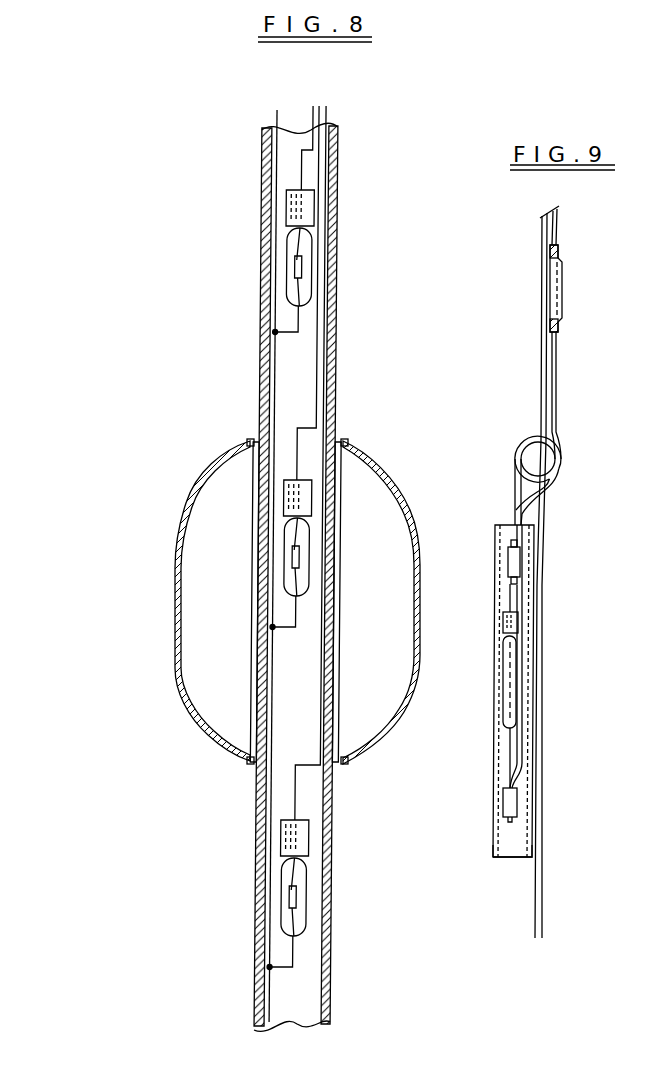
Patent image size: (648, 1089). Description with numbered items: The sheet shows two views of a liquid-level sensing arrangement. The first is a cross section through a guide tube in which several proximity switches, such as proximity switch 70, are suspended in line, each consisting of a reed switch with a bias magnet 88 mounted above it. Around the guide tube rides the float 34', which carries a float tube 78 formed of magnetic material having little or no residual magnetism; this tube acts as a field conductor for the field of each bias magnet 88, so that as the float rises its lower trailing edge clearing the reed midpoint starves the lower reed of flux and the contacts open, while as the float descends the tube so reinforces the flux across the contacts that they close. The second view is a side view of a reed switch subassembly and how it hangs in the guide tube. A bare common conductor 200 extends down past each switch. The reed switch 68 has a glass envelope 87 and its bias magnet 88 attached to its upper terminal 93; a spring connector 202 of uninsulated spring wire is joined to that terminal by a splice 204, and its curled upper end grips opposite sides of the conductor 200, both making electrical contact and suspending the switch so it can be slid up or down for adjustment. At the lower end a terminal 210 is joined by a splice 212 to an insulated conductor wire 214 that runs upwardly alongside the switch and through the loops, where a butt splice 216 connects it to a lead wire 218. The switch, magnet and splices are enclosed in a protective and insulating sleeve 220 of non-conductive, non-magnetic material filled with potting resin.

In FIG. 8, the proximity switch 70 is at (262, 264).
In FIG. 8, the bias magnet 88 is at (315, 214).
In FIG. 9, the bias magnet 88 is at (505, 625).
In FIG. 8, the float 34' is at (279, 601).
In FIG. 8, the float tube 78 is at (240, 631).
In FIG. 9, the common lead or conductor 200 is at (542, 372).
In FIG. 9, the spring connector 202 is at (517, 492).
In FIG. 9, the splice 204 is at (508, 560).
In FIG. 9, the upper terminal 93 is at (503, 592).
In FIG. 9, the reed switch 68 is at (509, 695).
In FIG. 9, the glass envelope 87 is at (503, 705).
In FIG. 9, the terminal 210 is at (507, 752).
In FIG. 9, the splice 212 is at (508, 800).
In FIG. 9, the insulated conductor wire 214 is at (543, 498).
In FIG. 9, the butt splice 216 is at (566, 300).
In FIG. 9, the lead wire 218 is at (556, 227).
In FIG. 9, the protective and insulating sleeve 220 is at (492, 828).